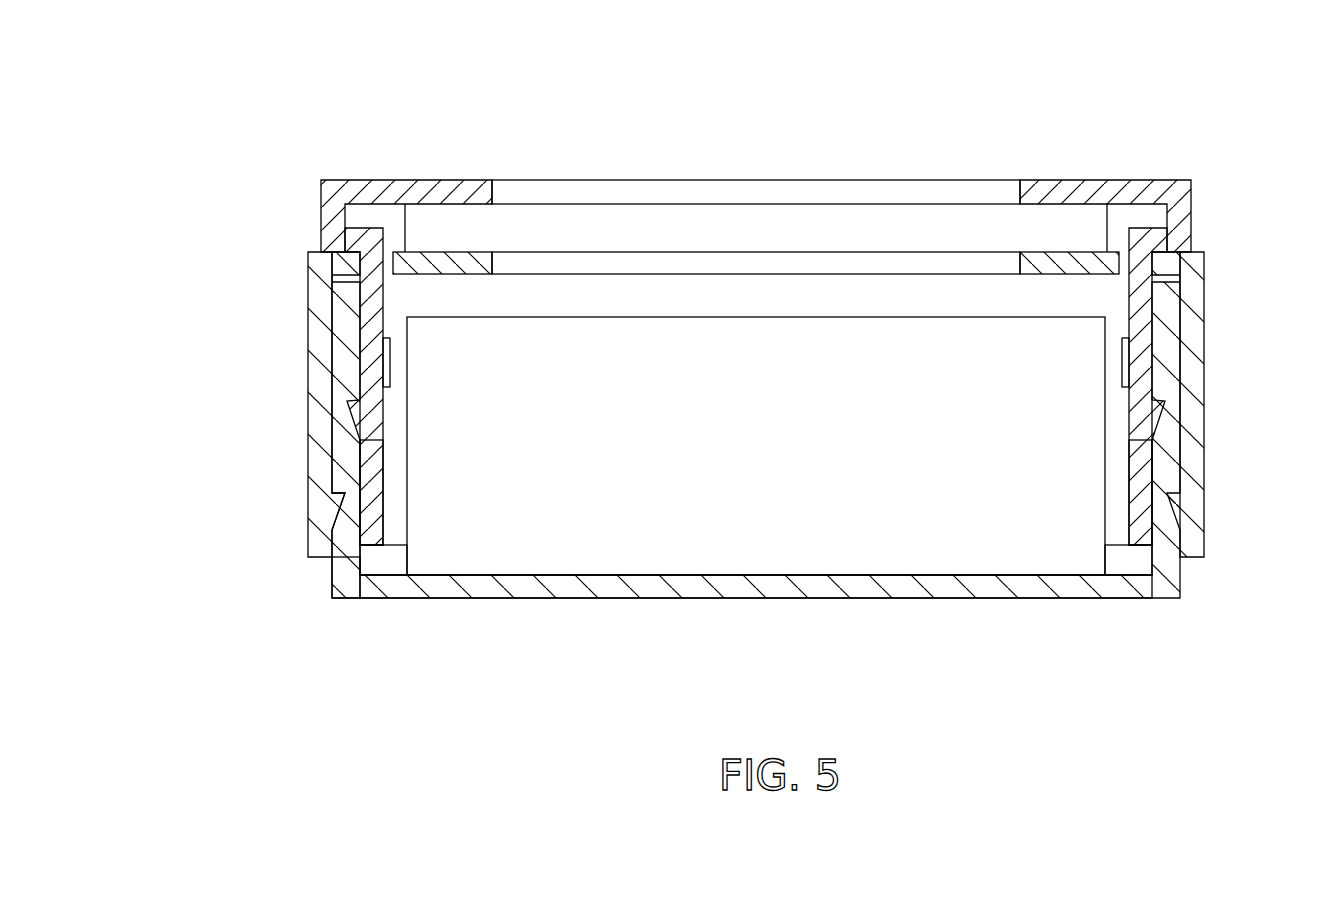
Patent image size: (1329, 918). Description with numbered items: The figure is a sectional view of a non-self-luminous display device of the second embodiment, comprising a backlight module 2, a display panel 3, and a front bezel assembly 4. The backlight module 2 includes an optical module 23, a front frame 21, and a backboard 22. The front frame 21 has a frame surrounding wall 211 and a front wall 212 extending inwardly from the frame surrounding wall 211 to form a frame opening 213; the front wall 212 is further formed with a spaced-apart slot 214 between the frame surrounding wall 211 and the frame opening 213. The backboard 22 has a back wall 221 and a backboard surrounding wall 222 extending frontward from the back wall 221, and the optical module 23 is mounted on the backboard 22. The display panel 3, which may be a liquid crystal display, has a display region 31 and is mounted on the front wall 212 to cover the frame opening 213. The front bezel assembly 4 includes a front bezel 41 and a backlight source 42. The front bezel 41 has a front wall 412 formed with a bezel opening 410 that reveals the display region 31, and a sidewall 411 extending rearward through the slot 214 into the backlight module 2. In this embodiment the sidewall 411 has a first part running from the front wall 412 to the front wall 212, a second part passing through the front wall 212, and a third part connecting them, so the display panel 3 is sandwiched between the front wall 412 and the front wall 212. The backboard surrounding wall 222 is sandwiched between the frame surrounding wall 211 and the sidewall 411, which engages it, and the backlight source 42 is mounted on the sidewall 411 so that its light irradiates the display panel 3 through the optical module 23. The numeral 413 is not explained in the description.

The backlight module 2 is at (675, 507).
The front frame 21 is at (675, 425).
The frame surrounding wall 211 is at (320, 360).
The front wall 212 is at (360, 322).
The backboard 22 is at (723, 660).
The back wall 221 is at (507, 585).
The backboard surrounding wall 222 is at (327, 626).
The optical module 23 is at (690, 560).
The slot 214 is at (393, 265).
The display panel 3 is at (756, 176).
The display region 31 is at (800, 205).
The bezel opening 410 is at (595, 190).
The frame opening 213 is at (716, 262).
The front bezel assembly 4 is at (726, 301).
The front bezel 41 is at (726, 362).
The sidewall 411 is at (373, 297).
The front wall 412 is at (410, 194).
The backlight source 42 is at (382, 377).
The lower leg portion 413 is at (375, 468).